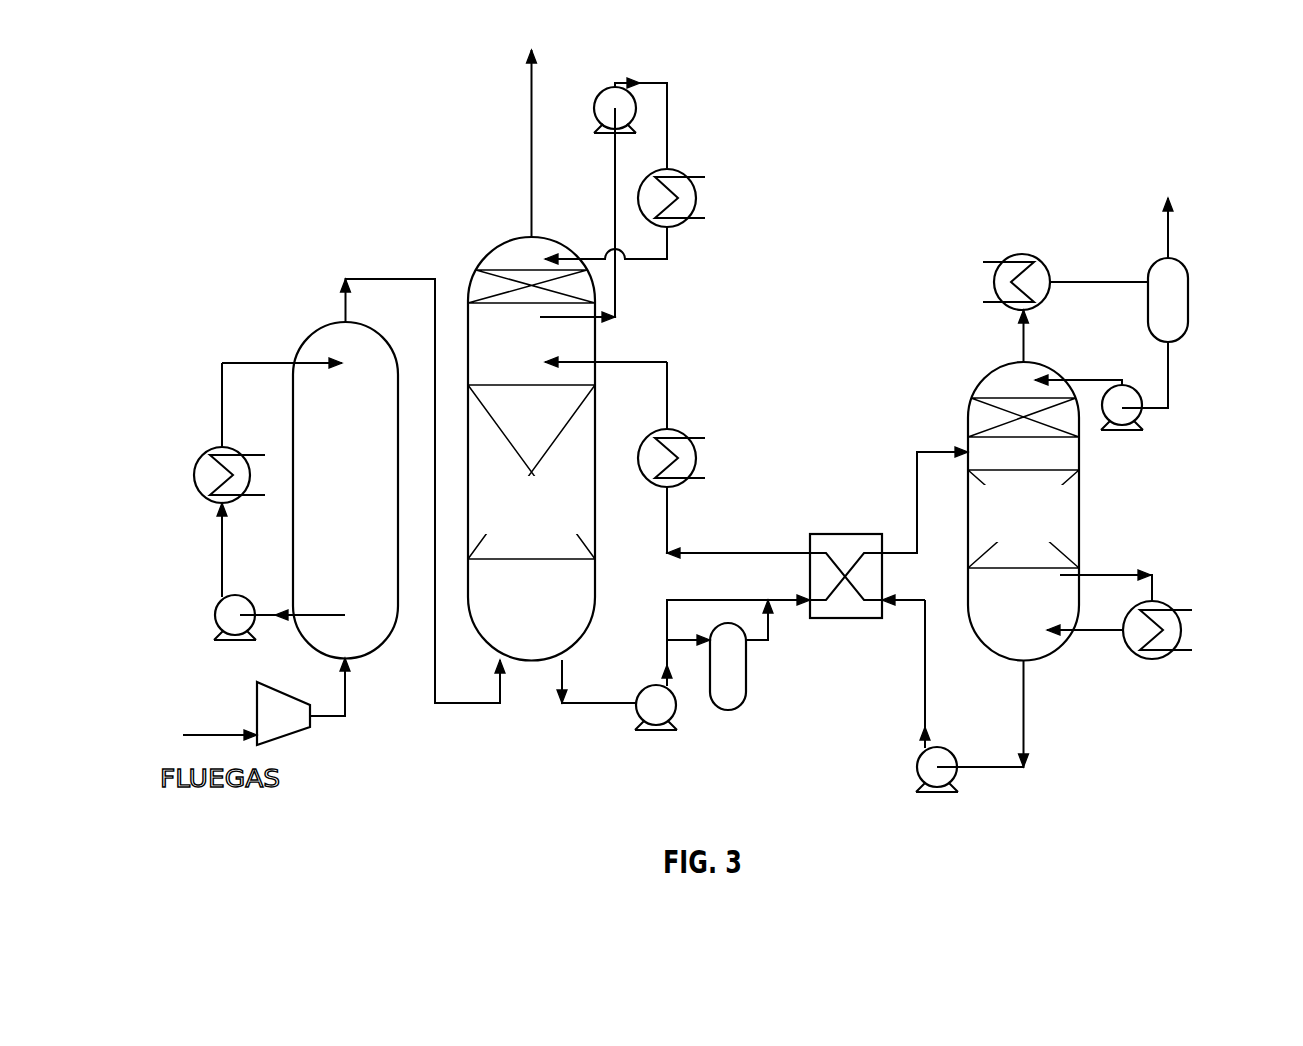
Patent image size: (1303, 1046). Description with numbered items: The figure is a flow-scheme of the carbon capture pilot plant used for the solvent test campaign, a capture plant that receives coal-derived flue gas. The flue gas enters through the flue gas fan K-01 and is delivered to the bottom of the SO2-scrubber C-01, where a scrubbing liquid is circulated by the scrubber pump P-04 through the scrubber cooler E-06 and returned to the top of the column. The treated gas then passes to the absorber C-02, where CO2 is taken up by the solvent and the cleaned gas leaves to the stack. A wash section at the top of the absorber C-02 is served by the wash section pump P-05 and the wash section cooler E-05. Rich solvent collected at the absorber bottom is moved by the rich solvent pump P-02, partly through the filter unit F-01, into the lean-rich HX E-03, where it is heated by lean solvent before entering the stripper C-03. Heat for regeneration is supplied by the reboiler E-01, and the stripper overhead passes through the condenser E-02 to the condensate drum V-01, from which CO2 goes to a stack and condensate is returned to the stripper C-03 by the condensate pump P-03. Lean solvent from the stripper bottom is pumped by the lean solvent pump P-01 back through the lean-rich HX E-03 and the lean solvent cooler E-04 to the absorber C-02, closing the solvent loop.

The SO2-scrubber C-01 is at (363, 491).
The absorber C-02 is at (534, 376).
The stripper C-03 is at (1044, 538).
The reboiler E-01 is at (1144, 630).
The condenser E-02 is at (1036, 282).
The lean-rich HX E-03 is at (889, 532).
The lean solvent cooler E-04 is at (677, 457).
The wash section cooler E-05 is at (650, 216).
The scrubber cooler E-06 is at (237, 480).
The lean solvent pump P-01 is at (911, 696).
The rich solvent pump P-02 is at (720, 679).
The condensate pump P-03 is at (1091, 419).
The scrubber pump P-04 is at (236, 632).
The wash section pump P-05 is at (603, 184).
The flue gas fan K-01 is at (267, 708).
The filter unit F-01 is at (756, 655).
The condensate drum V-01 is at (1183, 285).